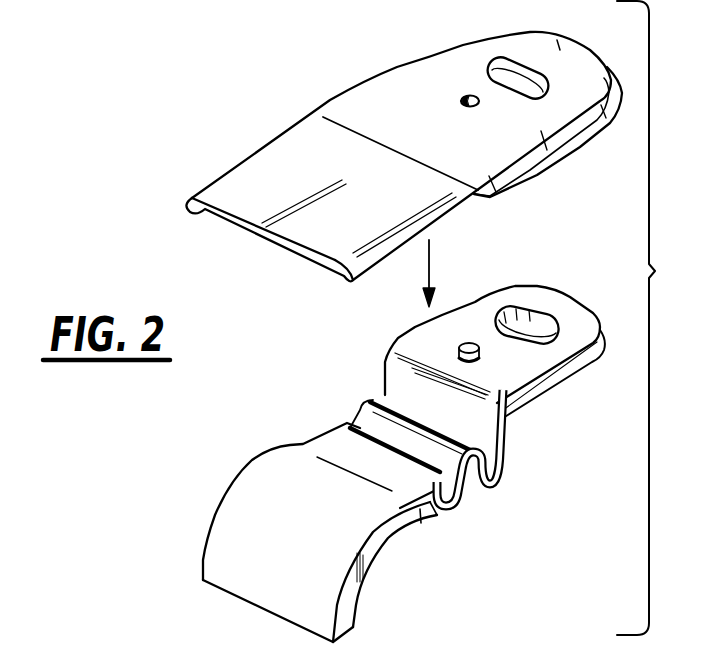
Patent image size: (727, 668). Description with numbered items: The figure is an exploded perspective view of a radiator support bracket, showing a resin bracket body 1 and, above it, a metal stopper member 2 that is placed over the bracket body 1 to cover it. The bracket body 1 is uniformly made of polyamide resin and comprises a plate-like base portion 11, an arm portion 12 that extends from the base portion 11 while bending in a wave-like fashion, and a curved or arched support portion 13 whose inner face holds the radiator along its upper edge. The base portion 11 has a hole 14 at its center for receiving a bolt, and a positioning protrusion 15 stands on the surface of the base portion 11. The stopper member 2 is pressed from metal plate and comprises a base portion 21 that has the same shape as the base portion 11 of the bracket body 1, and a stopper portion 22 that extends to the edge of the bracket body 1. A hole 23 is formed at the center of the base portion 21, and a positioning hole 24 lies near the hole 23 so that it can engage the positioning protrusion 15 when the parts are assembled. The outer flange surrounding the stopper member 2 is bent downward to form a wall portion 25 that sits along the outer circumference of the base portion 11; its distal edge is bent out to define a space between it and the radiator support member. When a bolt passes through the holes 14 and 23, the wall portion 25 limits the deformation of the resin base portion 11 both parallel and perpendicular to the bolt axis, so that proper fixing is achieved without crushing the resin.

The bracket body 1 is at (521, 479).
The stopper member 2 is at (312, 80).
The base portion 11 is at (497, 297).
The arm portion 12 is at (358, 408).
The curved support portion 13 is at (233, 496).
The hole 14 is at (540, 318).
The positioning protrusion 15 is at (480, 359).
The base portion 21 is at (558, 47).
The stopper portion 22 is at (287, 153).
The hole 23 is at (514, 74).
The positioning hole 24 is at (464, 97).
The wall portion 25 is at (523, 167).